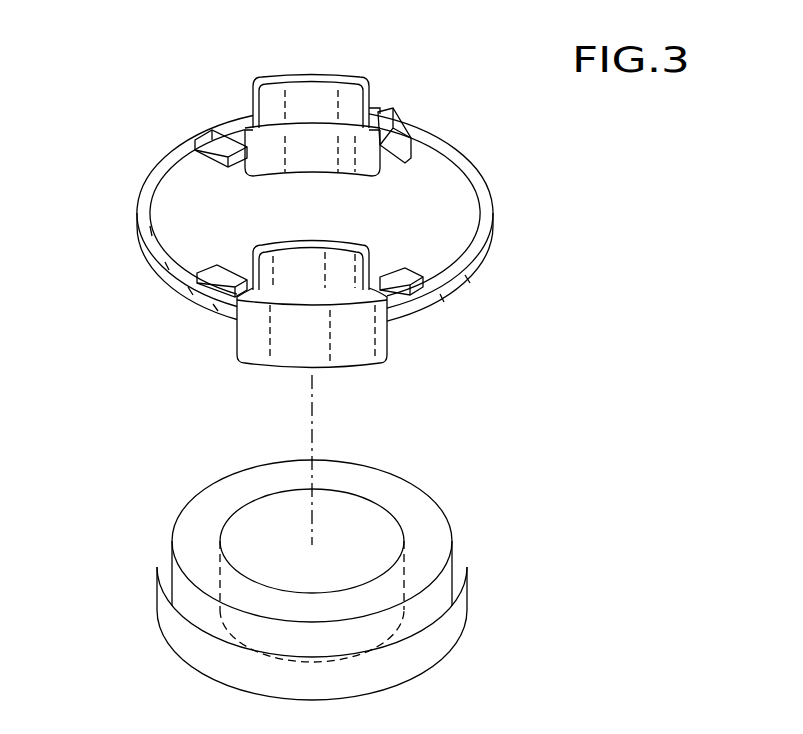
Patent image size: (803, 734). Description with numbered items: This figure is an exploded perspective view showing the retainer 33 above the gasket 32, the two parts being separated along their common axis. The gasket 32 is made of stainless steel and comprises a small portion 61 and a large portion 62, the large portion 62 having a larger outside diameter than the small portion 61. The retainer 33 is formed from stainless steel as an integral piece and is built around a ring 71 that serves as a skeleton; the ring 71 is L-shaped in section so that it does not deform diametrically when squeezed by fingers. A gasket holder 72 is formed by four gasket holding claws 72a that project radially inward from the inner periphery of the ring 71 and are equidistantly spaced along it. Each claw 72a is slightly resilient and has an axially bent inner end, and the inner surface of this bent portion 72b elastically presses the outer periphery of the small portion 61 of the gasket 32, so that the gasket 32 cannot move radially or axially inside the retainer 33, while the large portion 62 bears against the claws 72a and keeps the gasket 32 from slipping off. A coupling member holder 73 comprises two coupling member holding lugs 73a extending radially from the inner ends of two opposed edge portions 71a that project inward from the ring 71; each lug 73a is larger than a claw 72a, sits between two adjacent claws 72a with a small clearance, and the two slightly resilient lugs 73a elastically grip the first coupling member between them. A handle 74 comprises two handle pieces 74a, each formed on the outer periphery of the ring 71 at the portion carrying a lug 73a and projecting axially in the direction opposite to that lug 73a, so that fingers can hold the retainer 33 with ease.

The gasket 32 is at (530, 534).
The retainer 33 is at (498, 188).
The small portion 61 is at (408, 488).
The large portion 62 is at (430, 650).
The ring 71 is at (477, 230).
The edge portions 71a is at (373, 108).
The gasket holder 72 is at (398, 148).
The gasket holding claws 72a is at (215, 140).
The bent portion 72b is at (225, 155).
The coupling member holder 73 is at (318, 90).
The coupling member holding lugs 73a is at (272, 97).
The handle 74 is at (278, 347).
The handle pieces 74a is at (343, 345).